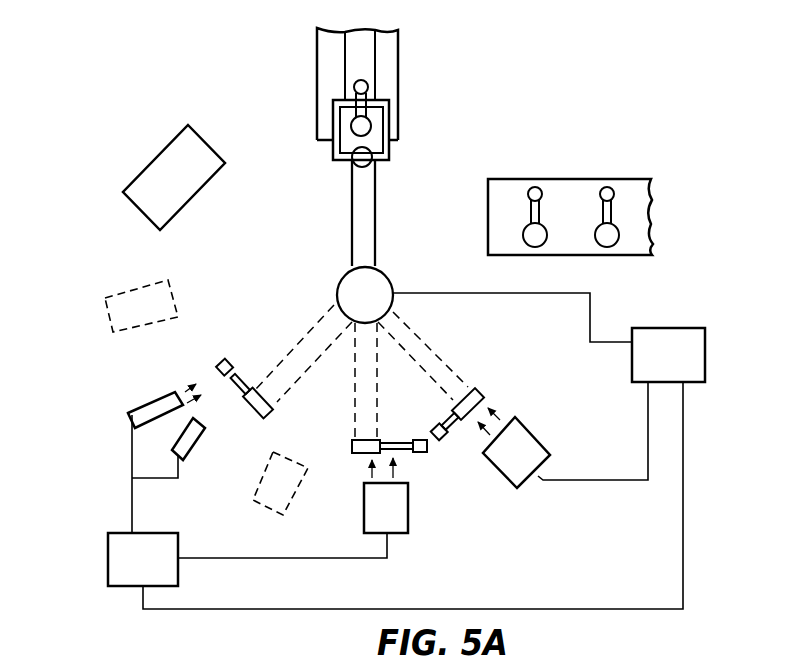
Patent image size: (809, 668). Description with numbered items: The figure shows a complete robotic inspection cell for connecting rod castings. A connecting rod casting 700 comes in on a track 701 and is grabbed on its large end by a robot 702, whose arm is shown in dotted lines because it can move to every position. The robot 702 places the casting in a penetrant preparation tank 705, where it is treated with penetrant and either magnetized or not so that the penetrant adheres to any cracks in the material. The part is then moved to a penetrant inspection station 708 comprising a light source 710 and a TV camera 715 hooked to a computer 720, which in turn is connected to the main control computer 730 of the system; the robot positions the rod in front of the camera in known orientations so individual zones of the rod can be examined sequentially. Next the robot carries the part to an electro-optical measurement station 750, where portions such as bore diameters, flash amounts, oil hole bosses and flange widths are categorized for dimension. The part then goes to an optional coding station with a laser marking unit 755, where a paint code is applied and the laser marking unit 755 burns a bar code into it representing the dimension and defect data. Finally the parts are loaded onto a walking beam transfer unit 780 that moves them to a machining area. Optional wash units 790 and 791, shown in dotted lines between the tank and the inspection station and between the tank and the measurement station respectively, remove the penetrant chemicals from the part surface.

The connecting rod casting 700 is at (369, 84).
The track 701 is at (398, 126).
The robot 702 is at (386, 306).
The penetrant preparation tank 705 is at (190, 200).
The penetrant inspection station 708 is at (118, 426).
The light source 710 is at (153, 410).
The TV camera 715 is at (200, 443).
The computer 720 is at (164, 570).
The main control computer 730 is at (689, 367).
The electro-optical measurement station 750 is at (407, 517).
The laser marking unit 755 is at (537, 467).
The walking beam transfer unit 780 is at (590, 178).
The wash unit 790 is at (162, 315).
The wash unit 791 is at (294, 484).